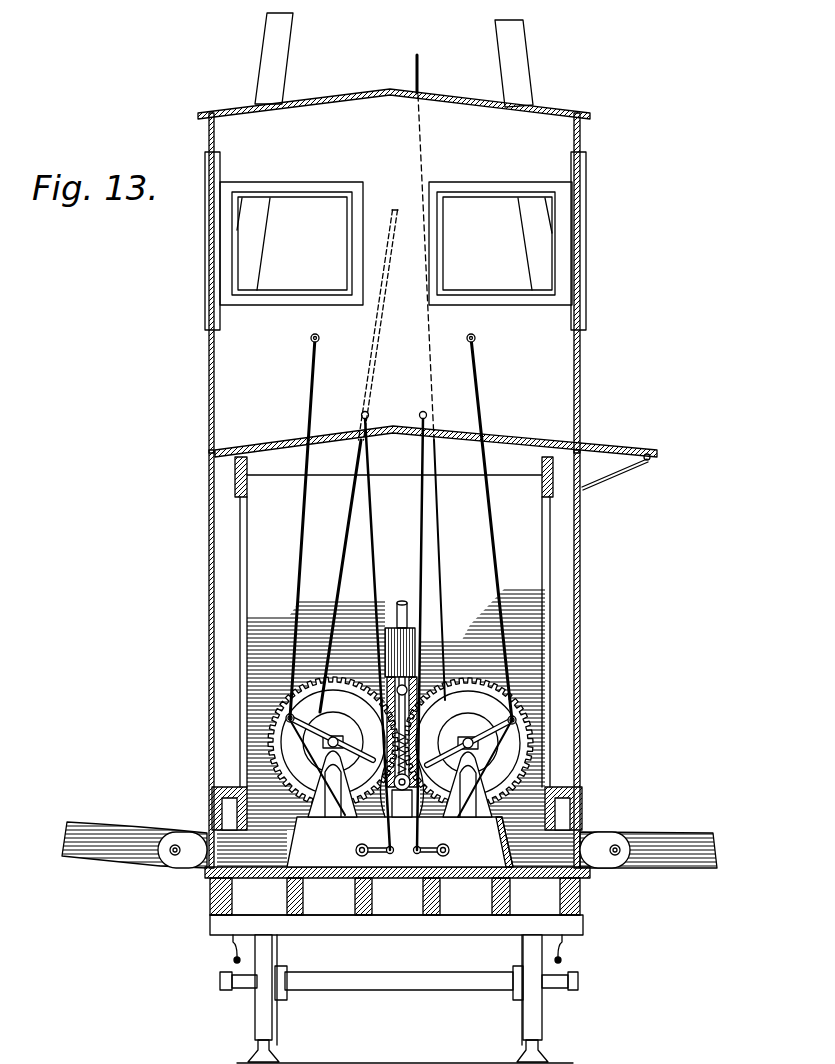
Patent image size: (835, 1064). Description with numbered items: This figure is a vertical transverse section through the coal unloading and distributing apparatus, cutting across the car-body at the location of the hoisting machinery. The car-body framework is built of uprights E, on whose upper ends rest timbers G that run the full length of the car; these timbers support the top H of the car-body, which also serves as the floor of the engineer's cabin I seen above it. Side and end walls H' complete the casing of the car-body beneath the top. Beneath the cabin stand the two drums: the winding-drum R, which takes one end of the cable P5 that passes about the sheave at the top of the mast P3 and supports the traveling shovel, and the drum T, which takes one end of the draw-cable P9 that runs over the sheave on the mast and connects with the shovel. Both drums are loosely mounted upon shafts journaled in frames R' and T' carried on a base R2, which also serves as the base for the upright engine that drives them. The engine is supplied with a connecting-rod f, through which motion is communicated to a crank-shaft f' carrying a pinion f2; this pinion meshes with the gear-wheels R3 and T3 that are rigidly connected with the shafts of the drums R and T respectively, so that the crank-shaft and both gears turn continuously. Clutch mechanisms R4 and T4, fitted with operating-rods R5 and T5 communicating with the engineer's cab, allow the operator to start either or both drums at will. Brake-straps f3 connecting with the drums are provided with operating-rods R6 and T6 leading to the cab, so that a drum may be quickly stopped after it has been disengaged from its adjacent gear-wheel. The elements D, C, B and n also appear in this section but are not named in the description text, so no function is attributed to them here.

The engineer's cabin I is at (394, 233).
The side and end walls H' is at (405, 659).
The uprights E is at (228, 587).
The top of the car-body H is at (436, 450).
The timbers G is at (243, 498).
The bracket D is at (212, 806).
The bed frame C is at (543, 850).
The truck frame B is at (396, 989).
The base R2 is at (483, 850).
The drum T is at (333, 727).
The winding-drum R is at (468, 719).
The cylinder n is at (420, 637).
The connecting-rod f is at (428, 728).
The crank-shaft f' is at (421, 815).
The pinion f2 is at (375, 815).
The brake-straps f3 is at (487, 817).
The clutch mechanism T4 is at (283, 738).
The clutch mechanism R4 is at (487, 757).
The gear-wheel R3 is at (516, 721).
The gear-wheel T3 is at (288, 715).
The frame T' is at (304, 769).
The frame R' is at (534, 769).
The operating-rod T5 is at (312, 366).
The operating-rod R5 is at (483, 399).
The operating-rod T6 is at (370, 420).
The operating-rod R6 is at (433, 417).
The mast P3 is at (385, 318).
The draw-cable P9 is at (340, 550).
The cable P5 is at (420, 70).